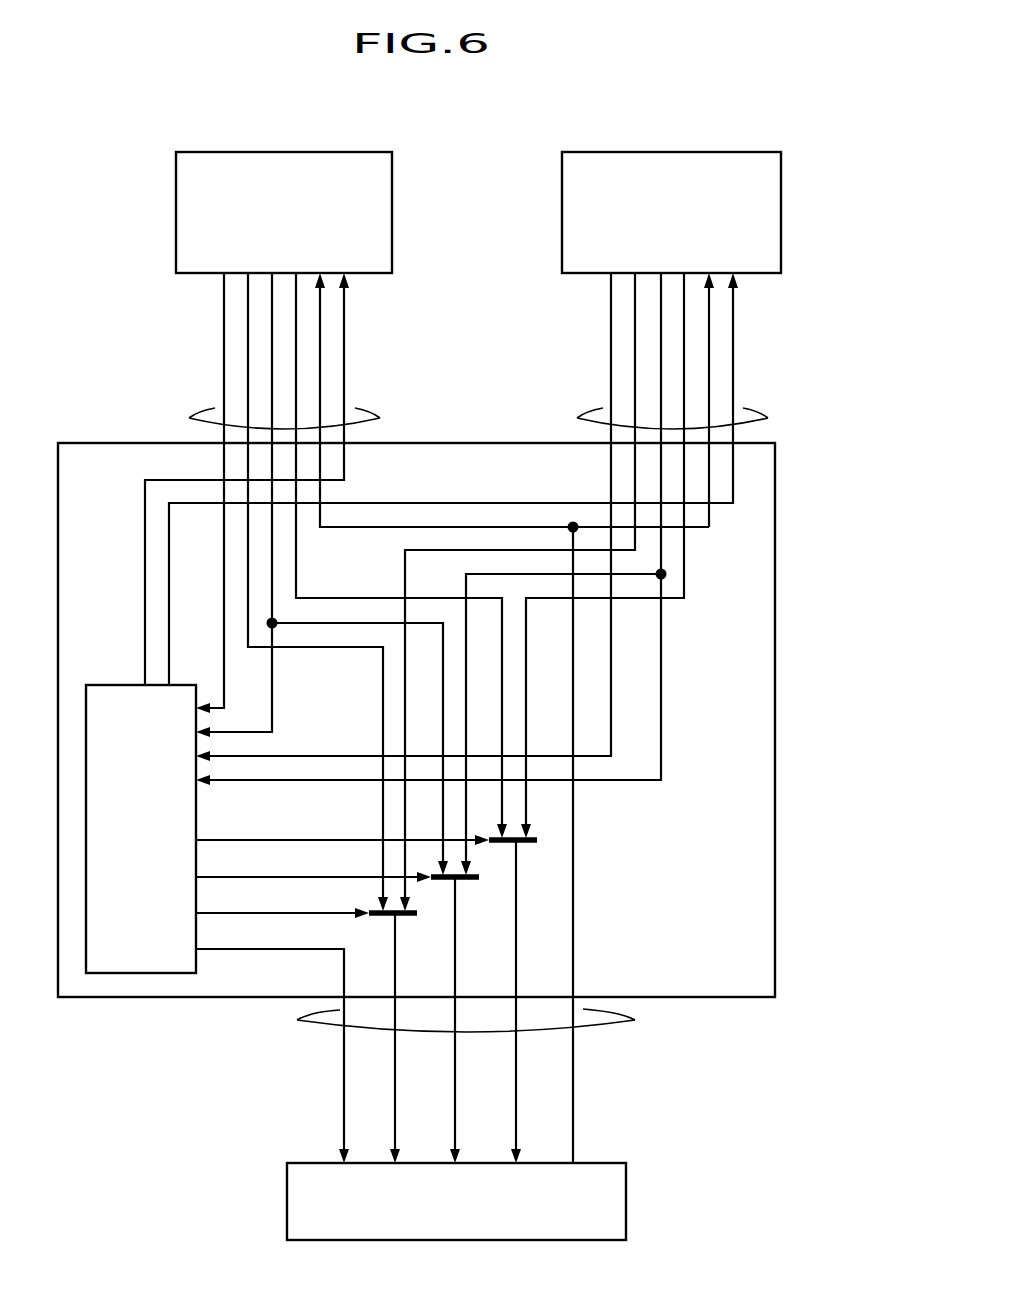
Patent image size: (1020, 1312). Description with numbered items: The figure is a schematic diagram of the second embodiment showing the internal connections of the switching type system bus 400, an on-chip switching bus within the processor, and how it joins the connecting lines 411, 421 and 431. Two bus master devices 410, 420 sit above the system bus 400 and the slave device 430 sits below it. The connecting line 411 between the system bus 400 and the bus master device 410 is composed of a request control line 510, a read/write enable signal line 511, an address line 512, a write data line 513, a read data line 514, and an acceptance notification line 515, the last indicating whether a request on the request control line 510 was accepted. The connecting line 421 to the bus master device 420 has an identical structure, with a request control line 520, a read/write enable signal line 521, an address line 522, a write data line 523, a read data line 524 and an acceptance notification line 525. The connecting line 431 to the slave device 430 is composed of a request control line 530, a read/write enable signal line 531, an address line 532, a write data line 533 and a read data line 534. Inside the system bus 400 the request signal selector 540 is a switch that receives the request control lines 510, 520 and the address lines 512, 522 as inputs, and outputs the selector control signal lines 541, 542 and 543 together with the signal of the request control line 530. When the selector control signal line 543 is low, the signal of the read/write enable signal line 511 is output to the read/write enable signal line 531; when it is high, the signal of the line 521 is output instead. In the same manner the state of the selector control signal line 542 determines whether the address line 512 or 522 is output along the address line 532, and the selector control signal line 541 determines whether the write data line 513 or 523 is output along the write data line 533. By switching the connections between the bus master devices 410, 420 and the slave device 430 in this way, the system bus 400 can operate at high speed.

The switching type system bus 400 is at (113, 442).
The bus master device 410 is at (392, 207).
The connecting line 411 is at (365, 410).
The bus master device 420 is at (781, 207).
The connecting line 421 is at (752, 410).
The slave device 430 is at (626, 1200).
The connecting line 431 is at (635, 1020).
The request control line 510 is at (224, 318).
The read/write enable signal line 511 is at (248, 355).
The address line 512 is at (272, 398).
The write data line 513 is at (296, 398).
The read data line 514 is at (320, 358).
The acceptance notification line 515 is at (344, 320).
The request control line 520 is at (611, 318).
The read/write enable signal line 521 is at (635, 355).
The address line 522 is at (660, 398).
The write data line 523 is at (684, 398).
The read data line 524 is at (709, 358).
The acceptance notification line 525 is at (733, 320).
The request control line 530 is at (344, 1057).
The read/write enable signal line 531 is at (395, 1088).
The address line 532 is at (455, 1122).
The write data line 533 is at (516, 1095).
The read data line 534 is at (575, 1050).
The request signal selector 540 is at (118, 683).
The selector control signal line 541 is at (337, 840).
The selector control signal line 542 is at (260, 877).
The selector control signal line 543 is at (212, 913).